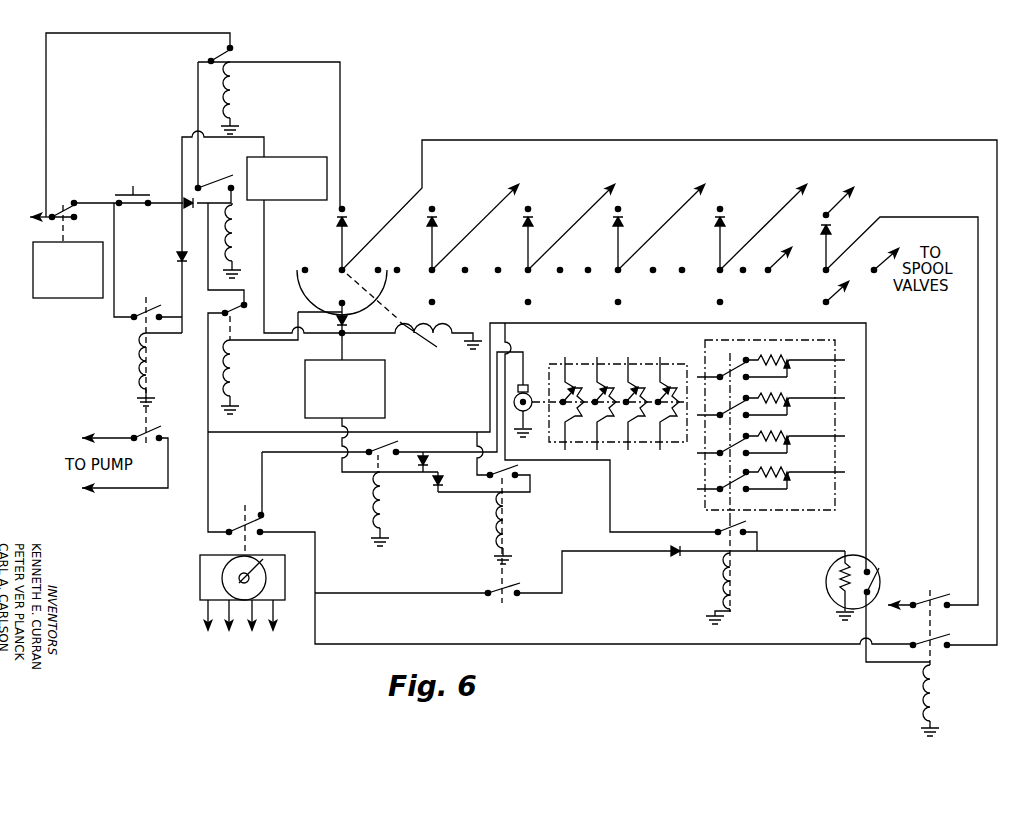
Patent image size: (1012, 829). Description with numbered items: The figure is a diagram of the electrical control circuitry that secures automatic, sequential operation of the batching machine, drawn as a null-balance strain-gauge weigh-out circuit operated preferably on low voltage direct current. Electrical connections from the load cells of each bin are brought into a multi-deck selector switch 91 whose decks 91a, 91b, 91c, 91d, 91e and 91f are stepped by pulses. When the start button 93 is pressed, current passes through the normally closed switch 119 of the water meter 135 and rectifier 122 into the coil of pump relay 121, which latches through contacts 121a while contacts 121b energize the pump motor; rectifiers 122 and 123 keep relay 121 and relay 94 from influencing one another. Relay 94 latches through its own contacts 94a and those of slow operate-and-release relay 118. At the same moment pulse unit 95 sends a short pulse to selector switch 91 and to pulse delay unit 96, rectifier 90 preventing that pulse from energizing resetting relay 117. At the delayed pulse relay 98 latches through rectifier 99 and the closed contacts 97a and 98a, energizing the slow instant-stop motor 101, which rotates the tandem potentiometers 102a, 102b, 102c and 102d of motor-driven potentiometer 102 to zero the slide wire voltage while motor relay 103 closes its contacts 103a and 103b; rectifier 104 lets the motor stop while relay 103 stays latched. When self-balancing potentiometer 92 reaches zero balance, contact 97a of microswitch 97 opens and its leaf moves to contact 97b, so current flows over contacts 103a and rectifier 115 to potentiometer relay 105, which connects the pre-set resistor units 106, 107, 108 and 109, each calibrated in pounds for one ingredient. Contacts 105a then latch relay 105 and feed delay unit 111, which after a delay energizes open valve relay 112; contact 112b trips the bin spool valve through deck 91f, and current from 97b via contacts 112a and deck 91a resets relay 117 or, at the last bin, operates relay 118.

The slow operate-and-release relay 118 is at (237, 89).
The water meter switch 119 is at (70, 204).
The start button 93 is at (133, 206).
The rectifier 123 is at (187, 209).
The relay contacts 94a is at (215, 126).
The pulse unit 95 is at (287, 169).
The relay 94 is at (241, 240).
The rectifier 122 is at (167, 259).
The relay contacts 121a is at (147, 298).
The water meter 135 is at (68, 280).
The pump relay 121 is at (161, 369).
The relay contacts 121b is at (166, 427).
The slow-release resetting relay 117 is at (246, 377).
The selector switch deck 91a is at (342, 257).
The selector switch deck 91b is at (459, 241).
The selector switch deck 91c is at (557, 241).
The selector switch deck 91d is at (647, 241).
The selector switch deck 91e is at (745, 241).
The selector switch deck 91f is at (834, 248).
The multi-deck selector switch 91 is at (412, 311).
The rectifier 90 is at (353, 319).
The pulse delay unit 96 is at (357, 389).
The relay contacts 98a is at (375, 451).
The relay 98 is at (370, 509).
The rectifier 99 is at (437, 463).
The rectifier 104 is at (452, 482).
The relay contact 103b is at (529, 474).
The motor relay 103 is at (518, 540).
The relay contact 103a is at (514, 581).
The microswitch 97 is at (238, 521).
The microswitch contact 97a is at (278, 512).
The microswitch contact 97b is at (274, 541).
The self-balancing potentiometer 92 is at (200, 567).
The motor 101 is at (535, 402).
The motor-driven potentiometer 102 is at (615, 403).
The continuous winding potentiometer 102a is at (557, 392).
The continuous winding potentiometer 102b is at (594, 396).
The continuous winding potentiometer 102c is at (636, 391).
The continuous winding potentiometer 102d is at (648, 466).
The pre-set resistor unit 109 is at (771, 361).
The pre-set resistor unit 108 is at (771, 398).
The pre-set resistor unit 107 is at (771, 435).
The pre-set resistor unit 106 is at (771, 471).
The relay contacts 105a is at (757, 531).
The potentiometer relay 105 is at (739, 572).
The rectifier 115 is at (682, 564).
The delay unit 111 is at (866, 583).
The relay contact 112b is at (918, 592).
The relay contacts 112a is at (920, 634).
The open valve relay 112 is at (950, 663).